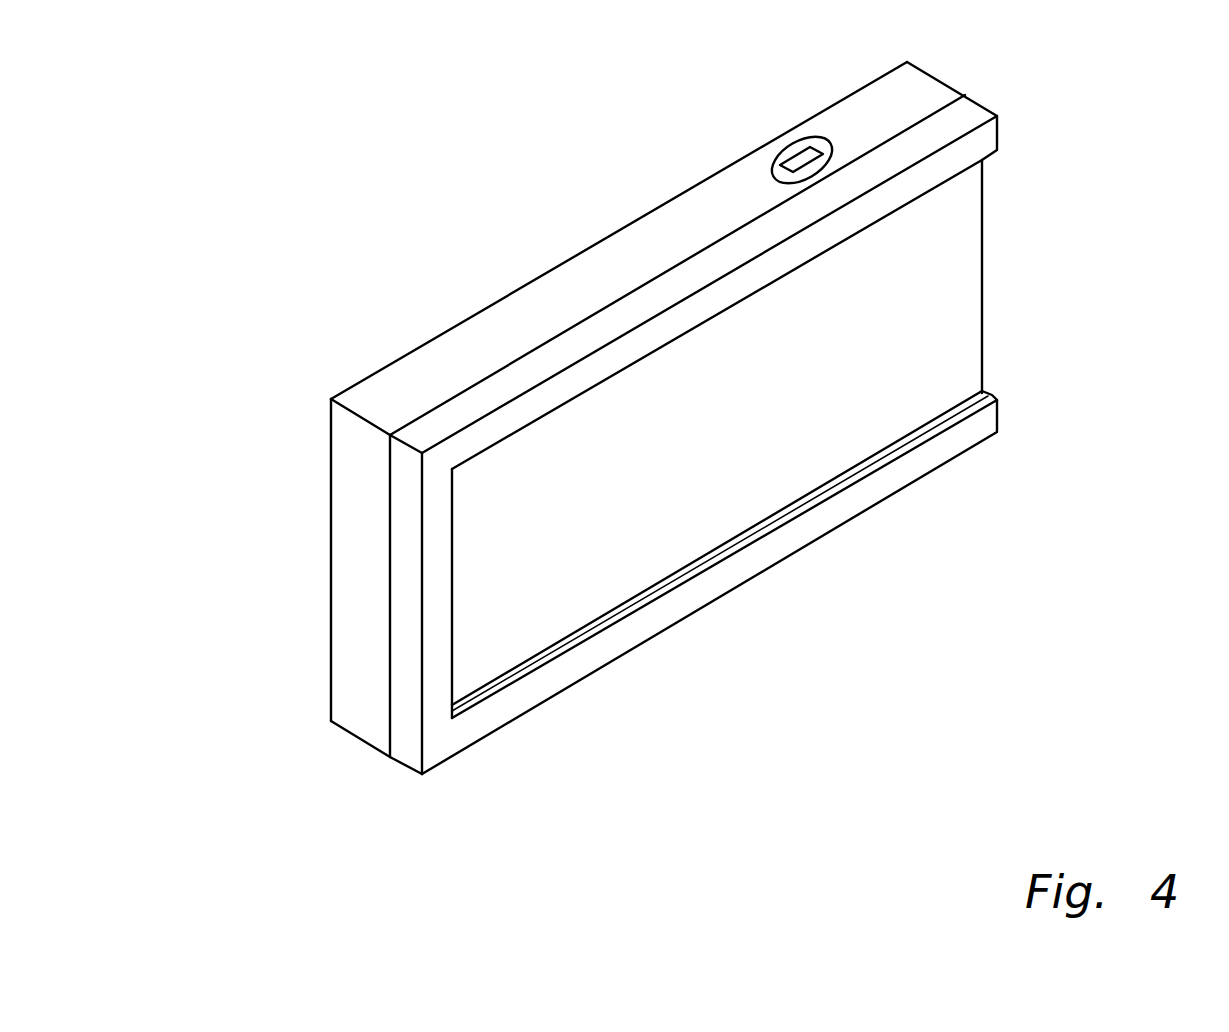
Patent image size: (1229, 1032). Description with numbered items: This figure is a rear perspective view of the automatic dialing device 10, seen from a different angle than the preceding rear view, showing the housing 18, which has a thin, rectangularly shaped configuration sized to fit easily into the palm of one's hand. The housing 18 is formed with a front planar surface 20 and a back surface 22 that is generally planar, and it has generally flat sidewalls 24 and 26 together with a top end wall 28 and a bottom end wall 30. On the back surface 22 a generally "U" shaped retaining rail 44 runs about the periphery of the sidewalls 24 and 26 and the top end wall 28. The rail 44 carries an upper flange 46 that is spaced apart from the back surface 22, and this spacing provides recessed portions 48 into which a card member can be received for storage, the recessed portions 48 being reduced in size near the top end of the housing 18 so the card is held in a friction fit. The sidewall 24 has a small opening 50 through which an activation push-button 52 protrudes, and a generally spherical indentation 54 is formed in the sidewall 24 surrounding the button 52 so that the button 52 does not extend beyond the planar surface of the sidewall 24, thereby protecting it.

The automatic dialing device 10 is at (222, 633).
The housing 18 is at (318, 675).
The front planar surface 20 is at (472, 313).
The back surface 22 is at (960, 310).
The sidewall 24 is at (612, 258).
The sidewall 26 is at (610, 668).
The top end wall 28 is at (347, 455).
The bottom end wall 30 is at (943, 80).
The retaining rail 44 is at (437, 690).
The upper flange 46 is at (577, 378).
The recessed portions 48 is at (717, 557).
The small opening 50 is at (815, 154).
The activation push-button 52 is at (785, 162).
The spherical indentation 54 is at (777, 170).